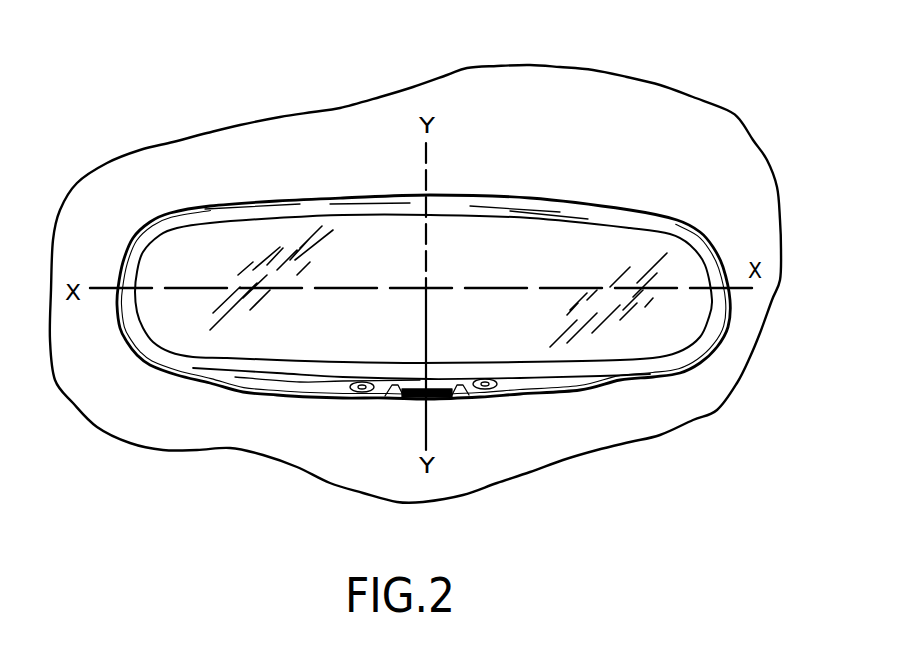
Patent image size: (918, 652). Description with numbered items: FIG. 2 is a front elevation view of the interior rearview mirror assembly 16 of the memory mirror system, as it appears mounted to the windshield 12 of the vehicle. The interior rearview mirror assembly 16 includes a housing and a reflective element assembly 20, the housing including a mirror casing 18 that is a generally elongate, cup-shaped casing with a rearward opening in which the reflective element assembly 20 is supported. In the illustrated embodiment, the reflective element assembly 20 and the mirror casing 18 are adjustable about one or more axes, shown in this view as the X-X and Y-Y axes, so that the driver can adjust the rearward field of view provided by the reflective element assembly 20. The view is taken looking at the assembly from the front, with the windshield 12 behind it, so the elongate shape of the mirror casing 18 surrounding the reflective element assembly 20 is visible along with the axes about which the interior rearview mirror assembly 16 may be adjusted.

The windshield 12 is at (307, 448).
The interior rearview mirror assembly 16 is at (550, 188).
The mirror casing 18 is at (610, 203).
The reflective element assembly 20 is at (662, 250).